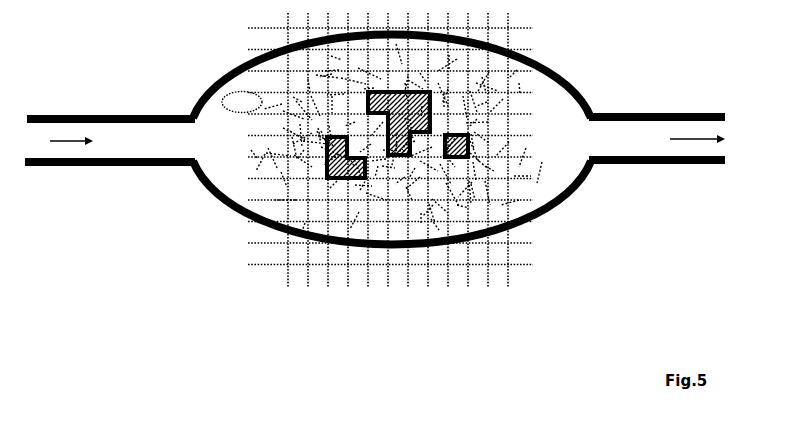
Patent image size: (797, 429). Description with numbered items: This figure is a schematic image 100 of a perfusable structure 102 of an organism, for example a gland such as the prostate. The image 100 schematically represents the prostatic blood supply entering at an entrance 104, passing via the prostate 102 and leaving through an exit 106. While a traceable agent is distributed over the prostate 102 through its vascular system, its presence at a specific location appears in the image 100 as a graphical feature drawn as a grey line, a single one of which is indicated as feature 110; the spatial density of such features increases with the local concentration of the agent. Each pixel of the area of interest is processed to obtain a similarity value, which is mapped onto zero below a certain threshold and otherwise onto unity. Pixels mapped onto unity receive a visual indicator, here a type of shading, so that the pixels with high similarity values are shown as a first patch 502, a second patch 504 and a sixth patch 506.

The image 100 is at (622, 313).
The perfusable structure 102 is at (570, 75).
The entrance 104 is at (147, 163).
The exit 106 is at (663, 162).
The feature 110 is at (235, 115).
The first patch 502 is at (345, 160).
The second patch 504 is at (398, 122).
The sixth patch 506 is at (455, 150).